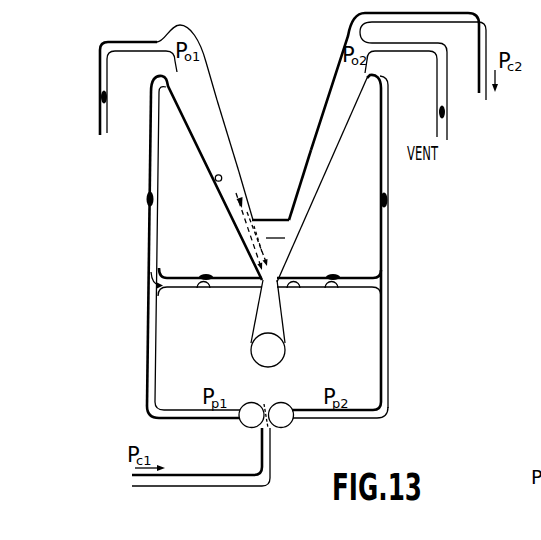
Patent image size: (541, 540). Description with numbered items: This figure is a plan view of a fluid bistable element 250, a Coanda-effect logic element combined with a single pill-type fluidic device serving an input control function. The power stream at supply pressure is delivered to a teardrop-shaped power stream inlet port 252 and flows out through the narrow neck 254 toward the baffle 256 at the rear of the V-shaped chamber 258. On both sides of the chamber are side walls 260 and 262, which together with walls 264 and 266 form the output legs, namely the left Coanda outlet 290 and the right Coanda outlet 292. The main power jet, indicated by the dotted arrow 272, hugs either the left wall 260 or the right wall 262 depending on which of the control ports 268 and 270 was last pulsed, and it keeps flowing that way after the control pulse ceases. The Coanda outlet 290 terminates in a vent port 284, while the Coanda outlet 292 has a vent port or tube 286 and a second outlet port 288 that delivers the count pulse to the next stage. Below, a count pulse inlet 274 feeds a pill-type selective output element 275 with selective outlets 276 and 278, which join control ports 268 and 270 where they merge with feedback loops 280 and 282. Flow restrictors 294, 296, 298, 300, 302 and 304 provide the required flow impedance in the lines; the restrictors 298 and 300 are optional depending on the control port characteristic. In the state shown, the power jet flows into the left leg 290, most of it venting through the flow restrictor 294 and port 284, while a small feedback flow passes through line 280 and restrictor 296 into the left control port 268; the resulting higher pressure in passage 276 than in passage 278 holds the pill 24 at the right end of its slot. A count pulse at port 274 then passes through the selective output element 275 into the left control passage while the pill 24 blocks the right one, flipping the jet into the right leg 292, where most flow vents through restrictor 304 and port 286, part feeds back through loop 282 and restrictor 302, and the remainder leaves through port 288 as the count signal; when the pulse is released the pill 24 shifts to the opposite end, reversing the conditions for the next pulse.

The pill 24 is at (286, 402).
The fluid bistable element 250 is at (397, 281).
The power stream inlet port 252 is at (290, 357).
The narrow neck 254 is at (273, 292).
The baffle 256 is at (271, 217).
The V-shaped chamber 258 is at (270, 228).
The left side wall 260 is at (219, 182).
The right side wall 262 is at (319, 188).
The wall 264 is at (229, 131).
The wall 266 is at (305, 150).
The left control port 268 is at (229, 289).
The right control port 270 is at (306, 292).
The main power jet 272 is at (284, 256).
The count pulse inlet 274 is at (142, 486).
The pill-type selective output element 275 is at (274, 436).
The left selective outlet 276 is at (197, 420).
The right selective outlet 278 is at (340, 420).
The left feedback loop 280 is at (157, 236).
The right feedback loop 282 is at (390, 233).
The vent port 284 is at (108, 134).
The vent port 286 is at (447, 137).
The second outlet port 288 is at (487, 100).
The left Coanda outlet 290 is at (214, 90).
The right Coanda outlet 292 is at (331, 92).
The flow restrictor 294 is at (107, 97).
The flow restrictor 296 is at (146, 201).
The flow restrictor 298 is at (208, 276).
The flow restrictor 300 is at (334, 278).
The flow restrictor 302 is at (388, 199).
The flow restrictor 304 is at (436, 111).